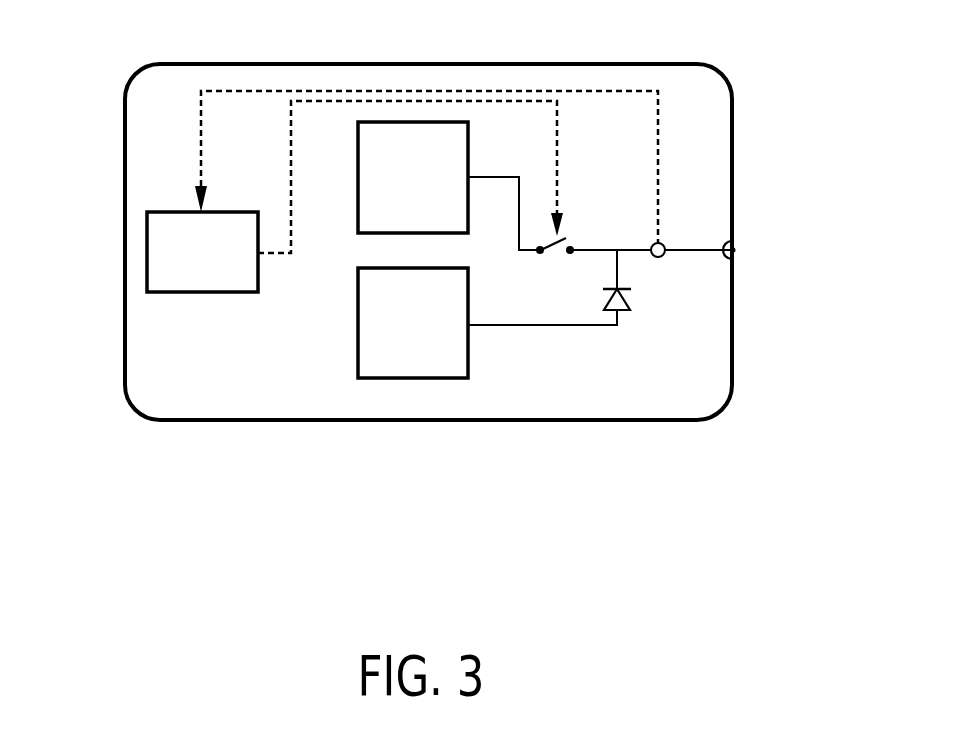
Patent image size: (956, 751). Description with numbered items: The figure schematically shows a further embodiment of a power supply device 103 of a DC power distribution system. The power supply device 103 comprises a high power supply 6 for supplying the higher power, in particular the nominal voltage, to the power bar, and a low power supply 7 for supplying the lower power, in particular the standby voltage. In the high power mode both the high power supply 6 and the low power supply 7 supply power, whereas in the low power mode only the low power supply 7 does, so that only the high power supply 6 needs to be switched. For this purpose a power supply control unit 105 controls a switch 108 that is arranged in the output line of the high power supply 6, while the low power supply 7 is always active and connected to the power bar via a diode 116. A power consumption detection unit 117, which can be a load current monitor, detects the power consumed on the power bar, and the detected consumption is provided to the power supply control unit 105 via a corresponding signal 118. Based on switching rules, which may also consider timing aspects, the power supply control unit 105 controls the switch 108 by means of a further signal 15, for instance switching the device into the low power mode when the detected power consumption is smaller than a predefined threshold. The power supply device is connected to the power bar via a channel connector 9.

The power supply device 103 is at (227, 420).
The power supply control unit 105 is at (147, 258).
The high power supply 6 is at (388, 122).
The low power supply 7 is at (413, 378).
The switch 108 is at (566, 236).
The diode 116 is at (628, 318).
The power consumption detection unit 117 is at (671, 242).
The channel connector 9 is at (742, 248).
The signal 118 is at (642, 91).
The further signal 15 is at (272, 255).